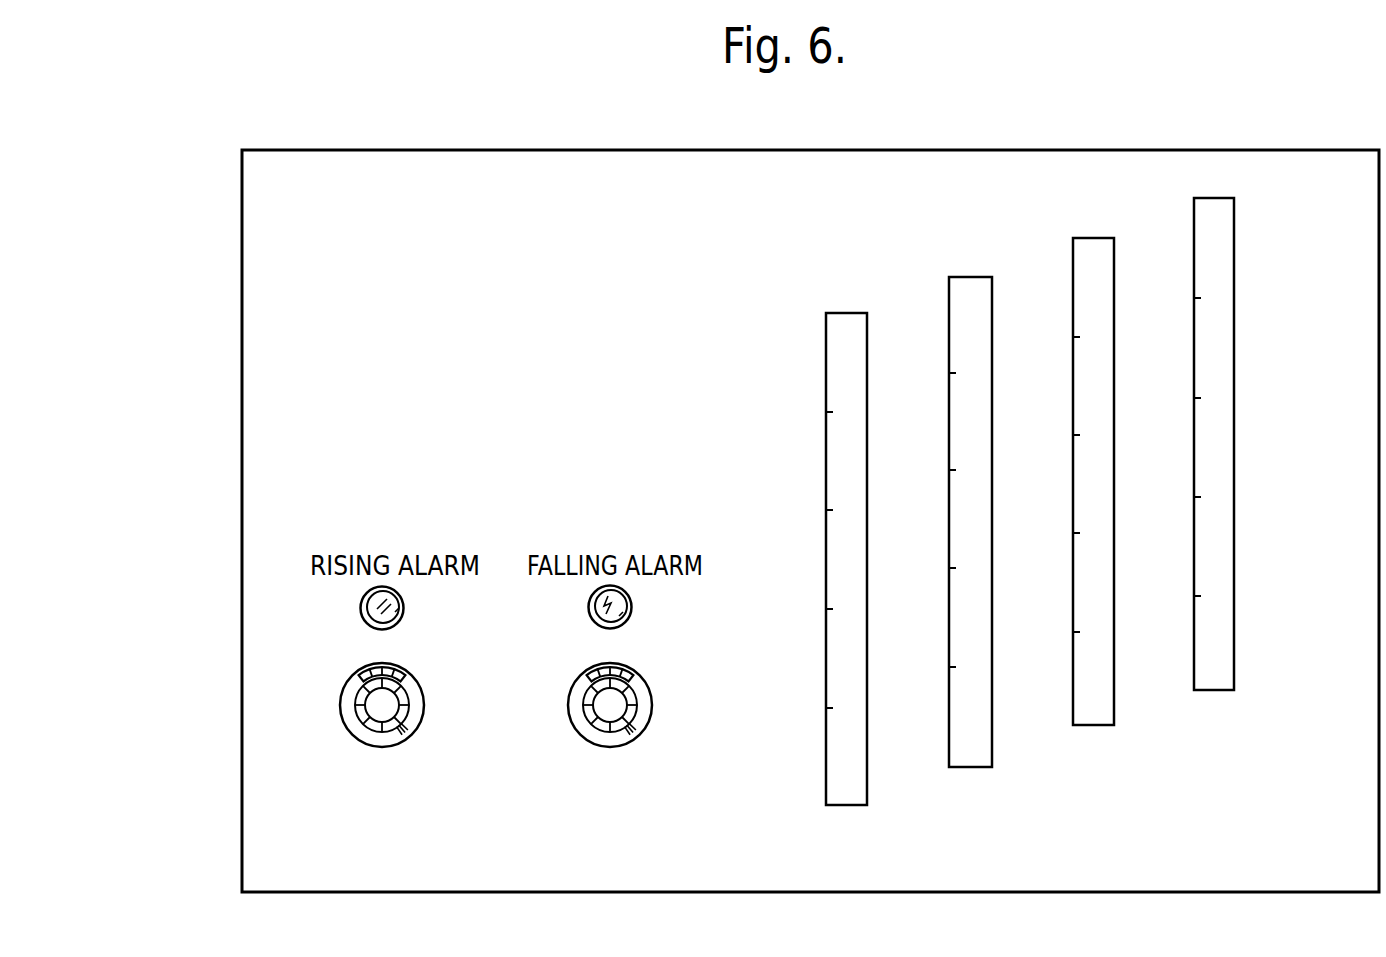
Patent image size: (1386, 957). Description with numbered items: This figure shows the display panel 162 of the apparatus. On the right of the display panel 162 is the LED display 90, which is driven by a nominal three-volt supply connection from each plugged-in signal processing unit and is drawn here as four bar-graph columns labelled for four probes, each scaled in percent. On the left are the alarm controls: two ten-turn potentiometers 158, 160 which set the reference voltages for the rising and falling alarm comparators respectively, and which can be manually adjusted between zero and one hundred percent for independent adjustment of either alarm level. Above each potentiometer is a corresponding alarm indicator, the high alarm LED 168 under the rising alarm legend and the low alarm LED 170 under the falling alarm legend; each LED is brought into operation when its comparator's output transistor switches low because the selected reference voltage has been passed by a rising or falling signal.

The display panel 162 is at (248, 257).
The LED display 90 is at (752, 361).
The high alarm LED 168 is at (364, 612).
The low alarm LED 170 is at (596, 612).
The 10-turn potentiometer 158 is at (368, 742).
The 10-turn potentiometer 160 is at (597, 742).